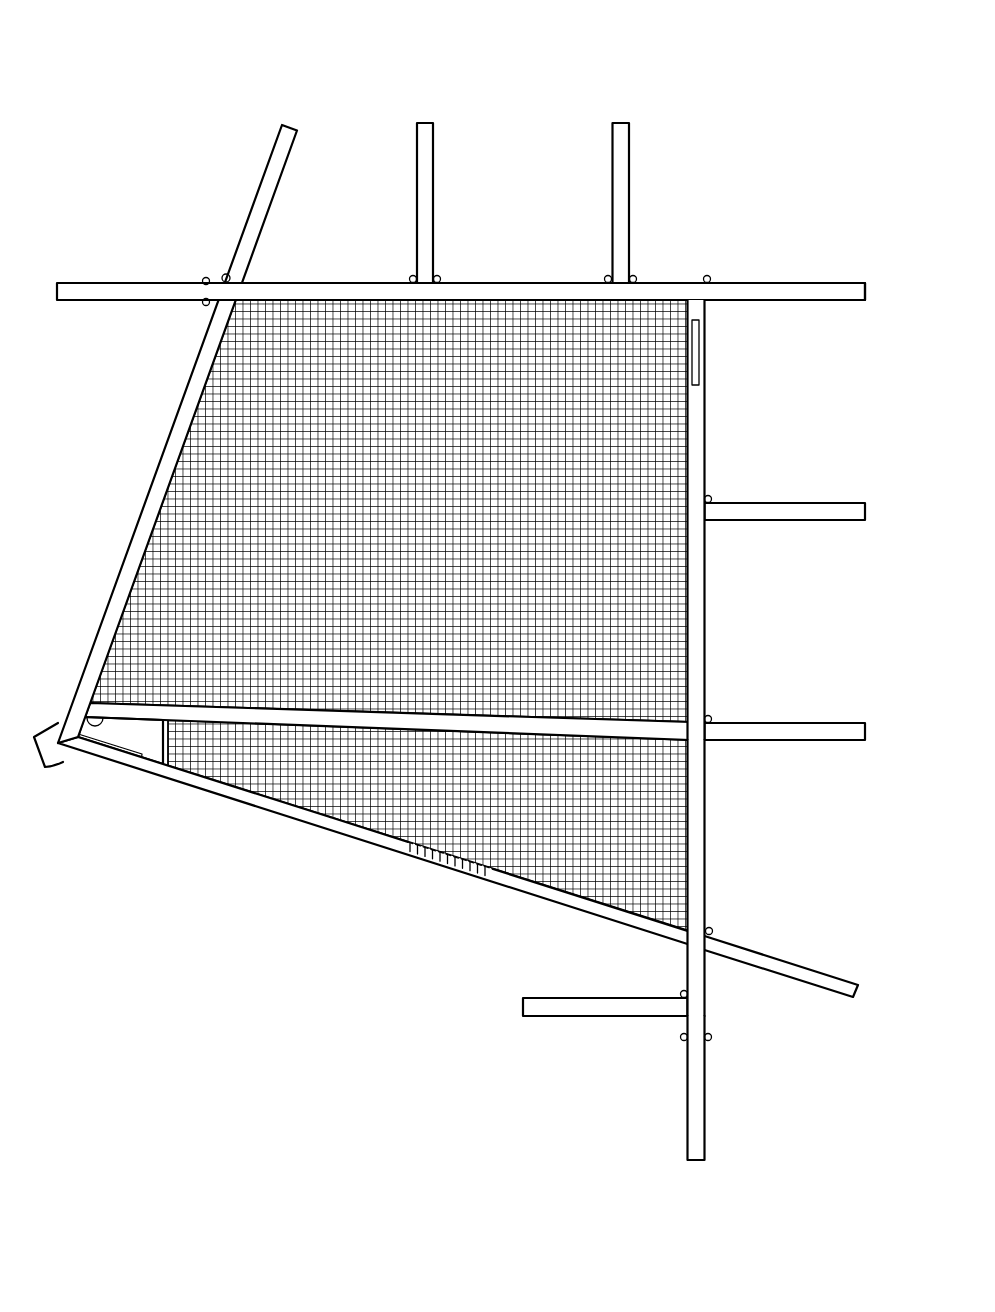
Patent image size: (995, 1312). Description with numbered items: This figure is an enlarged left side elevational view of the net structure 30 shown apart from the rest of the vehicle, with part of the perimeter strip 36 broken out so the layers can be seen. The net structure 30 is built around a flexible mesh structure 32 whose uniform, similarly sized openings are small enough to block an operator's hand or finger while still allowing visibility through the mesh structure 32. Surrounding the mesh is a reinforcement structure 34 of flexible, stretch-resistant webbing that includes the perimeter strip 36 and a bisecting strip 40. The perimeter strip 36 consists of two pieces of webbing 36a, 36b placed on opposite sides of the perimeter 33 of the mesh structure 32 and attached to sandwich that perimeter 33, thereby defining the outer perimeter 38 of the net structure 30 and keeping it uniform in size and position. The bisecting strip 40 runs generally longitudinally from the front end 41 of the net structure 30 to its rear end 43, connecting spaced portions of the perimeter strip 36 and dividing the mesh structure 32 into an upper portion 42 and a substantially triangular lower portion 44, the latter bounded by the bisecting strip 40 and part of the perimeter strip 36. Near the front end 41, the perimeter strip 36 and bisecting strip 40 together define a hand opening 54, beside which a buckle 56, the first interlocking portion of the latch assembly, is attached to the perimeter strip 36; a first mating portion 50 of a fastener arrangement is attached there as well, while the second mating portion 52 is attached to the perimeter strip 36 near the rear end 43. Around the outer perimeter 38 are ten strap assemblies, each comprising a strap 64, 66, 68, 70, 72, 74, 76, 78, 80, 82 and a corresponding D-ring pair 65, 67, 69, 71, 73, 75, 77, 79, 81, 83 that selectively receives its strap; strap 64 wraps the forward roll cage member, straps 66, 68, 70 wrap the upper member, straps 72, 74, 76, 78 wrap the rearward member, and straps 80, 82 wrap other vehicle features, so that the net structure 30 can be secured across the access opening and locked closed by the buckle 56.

The net structure 30 is at (233, 68).
The mesh structure 32 is at (200, 458).
The perimeter 33 is at (427, 857).
The reinforcement structure 34 is at (458, 867).
The perimeter strip 36 is at (274, 823).
The piece of webbing 36a is at (335, 826).
The piece of webbing 36b is at (482, 870).
The outer perimeter 38 is at (568, 906).
The bisecting strip 40 is at (147, 696).
The front end 41 is at (162, 434).
The upper portion 42 is at (666, 418).
The rear end 43 is at (701, 734).
The lower portion 44 is at (666, 832).
The first mating portion 50 is at (120, 758).
The second mating portion 52 is at (700, 352).
The hand opening 54 is at (88, 718).
The buckle 56 is at (48, 769).
The strap 64 is at (90, 283).
The D-ring pair 65 is at (203, 278).
The strap 66 is at (266, 165).
The D-ring pair 67 is at (224, 272).
The strap 68 is at (417, 148).
The D-ring pair 69 is at (409, 279).
The strap 70 is at (629, 148).
The D-ring pair 71 is at (605, 279).
The strap 72 is at (838, 283).
The D-ring pair 73 is at (709, 277).
The strap 74 is at (838, 503).
The D-ring pair 75 is at (712, 500).
The strap 76 is at (838, 723).
The D-ring pair 77 is at (712, 720).
The strap 78 is at (828, 975).
The D-ring pair 79 is at (713, 929).
The strap 80 is at (706, 1138).
The D-ring pair 81 is at (680, 1040).
The strap 82 is at (553, 1017).
The D-ring pair 83 is at (683, 991).